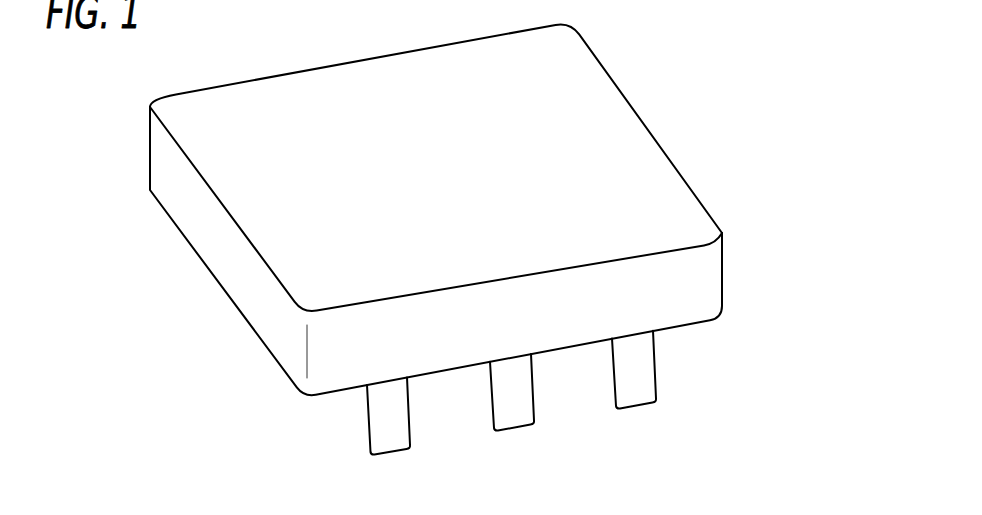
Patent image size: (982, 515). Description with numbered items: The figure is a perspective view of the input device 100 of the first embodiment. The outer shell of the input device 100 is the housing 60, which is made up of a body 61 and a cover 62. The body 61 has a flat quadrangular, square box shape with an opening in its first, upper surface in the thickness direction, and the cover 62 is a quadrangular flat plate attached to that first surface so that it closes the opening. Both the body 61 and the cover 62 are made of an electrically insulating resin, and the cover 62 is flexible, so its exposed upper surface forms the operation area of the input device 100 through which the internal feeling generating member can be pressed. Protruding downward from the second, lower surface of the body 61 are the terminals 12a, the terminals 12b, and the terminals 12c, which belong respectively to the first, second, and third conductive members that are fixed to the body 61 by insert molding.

The input device 100 is at (283, 52).
The housing 60 is at (782, 184).
The body 61 is at (707, 258).
The cover 62 is at (668, 184).
The terminals 12a is at (387, 441).
The terminals 12b is at (640, 393).
The terminals 12c is at (513, 417).